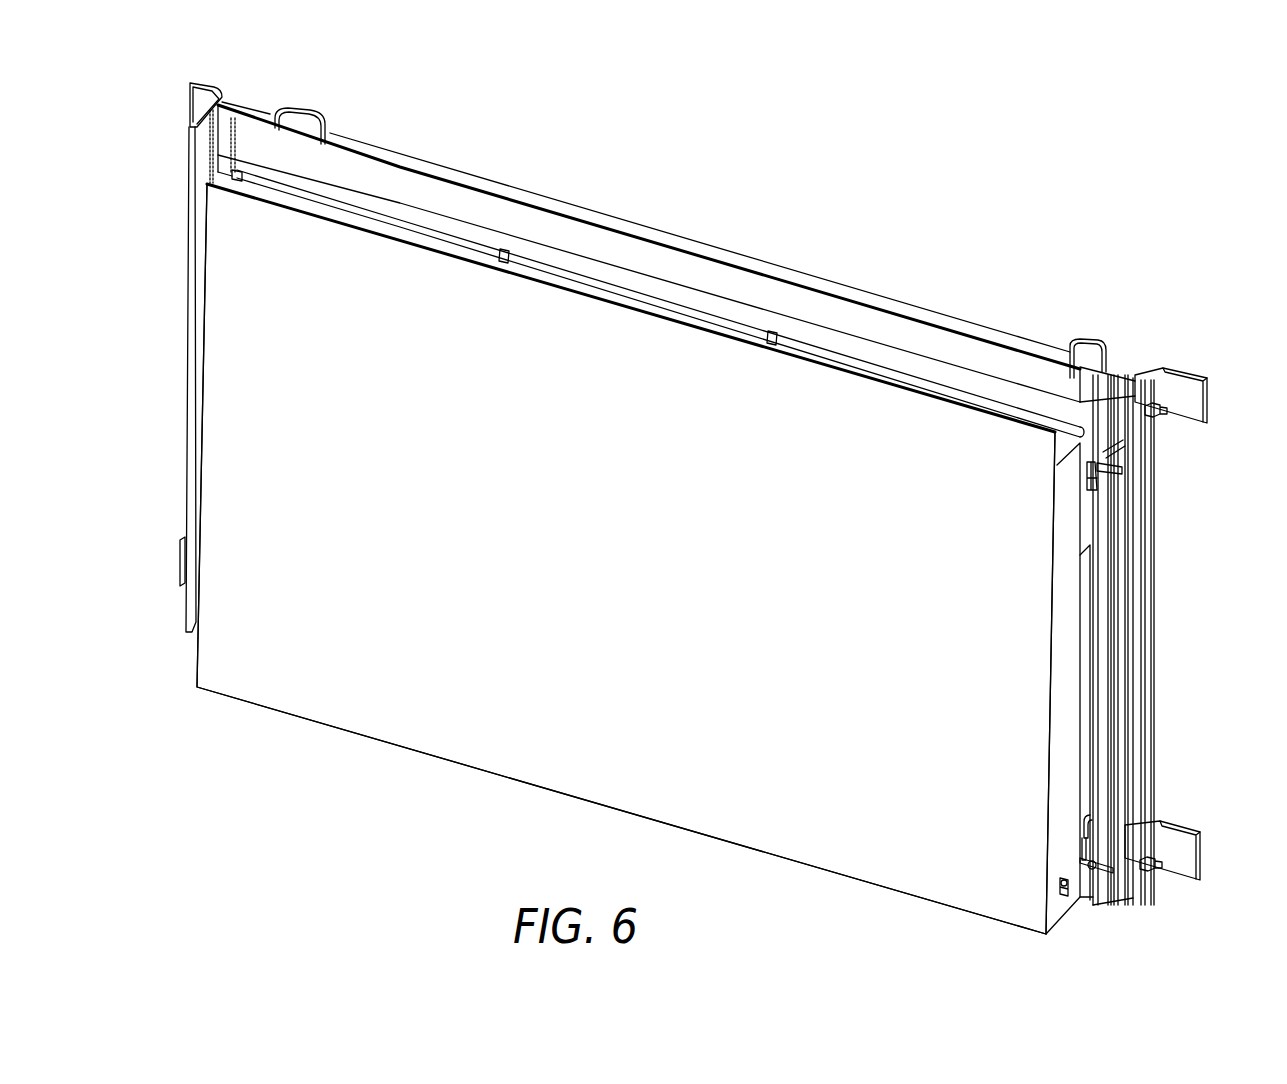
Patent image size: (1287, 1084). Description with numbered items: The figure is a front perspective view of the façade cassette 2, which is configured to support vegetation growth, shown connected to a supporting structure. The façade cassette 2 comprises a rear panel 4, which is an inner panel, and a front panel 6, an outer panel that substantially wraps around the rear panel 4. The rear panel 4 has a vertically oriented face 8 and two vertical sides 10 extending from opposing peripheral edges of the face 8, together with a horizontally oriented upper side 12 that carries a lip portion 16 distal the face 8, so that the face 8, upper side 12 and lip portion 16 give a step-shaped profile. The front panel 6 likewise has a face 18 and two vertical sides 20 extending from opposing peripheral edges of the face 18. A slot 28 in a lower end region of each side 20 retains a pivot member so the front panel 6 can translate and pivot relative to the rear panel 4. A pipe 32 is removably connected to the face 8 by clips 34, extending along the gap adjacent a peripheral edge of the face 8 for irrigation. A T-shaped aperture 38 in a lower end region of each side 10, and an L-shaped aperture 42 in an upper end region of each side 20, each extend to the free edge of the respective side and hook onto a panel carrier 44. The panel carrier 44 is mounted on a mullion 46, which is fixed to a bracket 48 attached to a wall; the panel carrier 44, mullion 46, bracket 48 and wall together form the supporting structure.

The façade cassette 2 is at (771, 148).
The rear panel 4 is at (947, 343).
The front panel 6 is at (443, 727).
The face 8 is at (353, 213).
The sides 10 is at (1085, 635).
The upper side 12 is at (450, 230).
The lip portion 16 is at (553, 232).
The face 18 is at (330, 692).
The sides 20 is at (1065, 735).
The slot 28 is at (1068, 892).
The pipe 32 is at (630, 300).
The clips 34 is at (772, 340).
The T-shaped aperture 38 is at (1092, 832).
The L-shaped aperture 42 is at (1106, 486).
The panel carrier 44 is at (1118, 470).
The mullion 46 is at (203, 160).
The bracket 48 is at (216, 86).